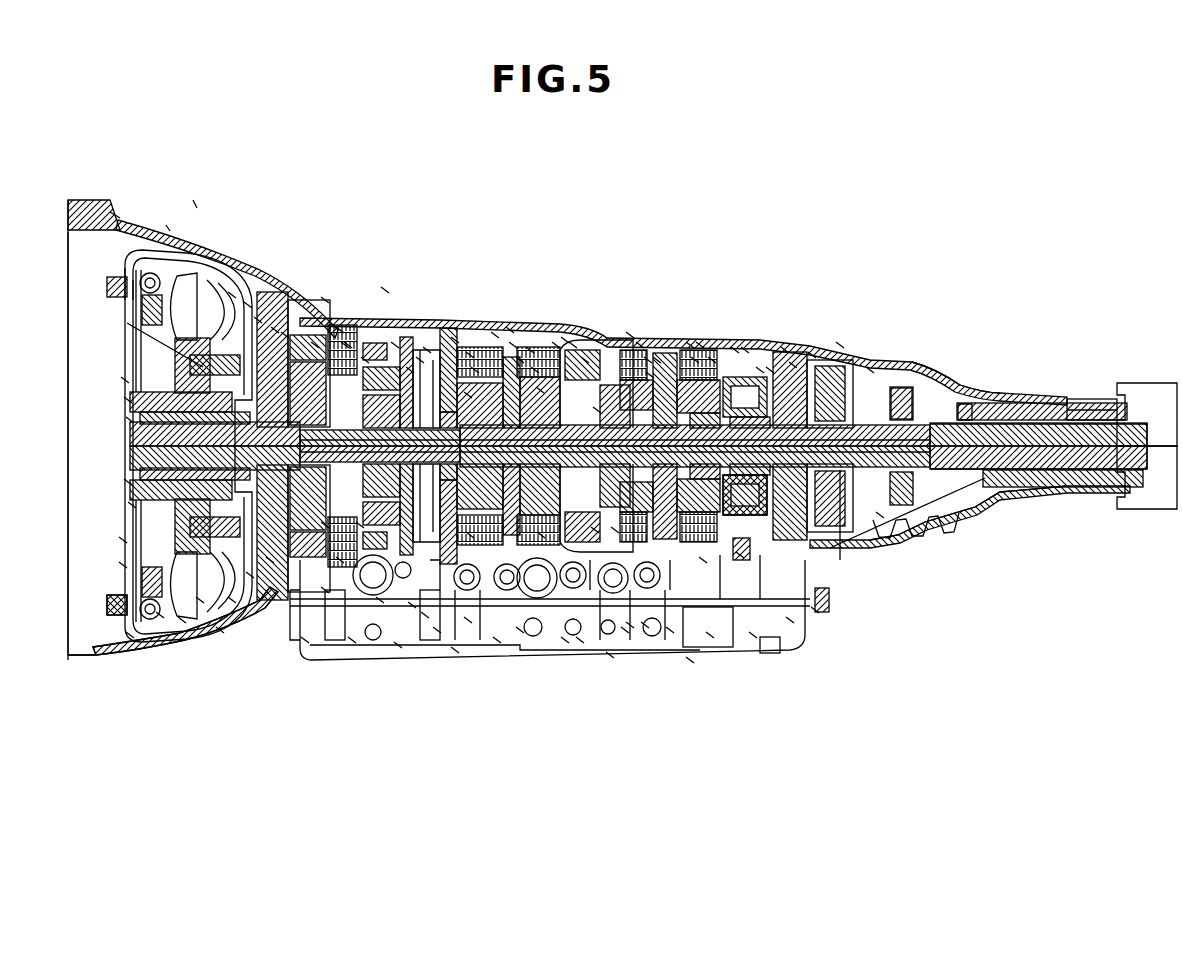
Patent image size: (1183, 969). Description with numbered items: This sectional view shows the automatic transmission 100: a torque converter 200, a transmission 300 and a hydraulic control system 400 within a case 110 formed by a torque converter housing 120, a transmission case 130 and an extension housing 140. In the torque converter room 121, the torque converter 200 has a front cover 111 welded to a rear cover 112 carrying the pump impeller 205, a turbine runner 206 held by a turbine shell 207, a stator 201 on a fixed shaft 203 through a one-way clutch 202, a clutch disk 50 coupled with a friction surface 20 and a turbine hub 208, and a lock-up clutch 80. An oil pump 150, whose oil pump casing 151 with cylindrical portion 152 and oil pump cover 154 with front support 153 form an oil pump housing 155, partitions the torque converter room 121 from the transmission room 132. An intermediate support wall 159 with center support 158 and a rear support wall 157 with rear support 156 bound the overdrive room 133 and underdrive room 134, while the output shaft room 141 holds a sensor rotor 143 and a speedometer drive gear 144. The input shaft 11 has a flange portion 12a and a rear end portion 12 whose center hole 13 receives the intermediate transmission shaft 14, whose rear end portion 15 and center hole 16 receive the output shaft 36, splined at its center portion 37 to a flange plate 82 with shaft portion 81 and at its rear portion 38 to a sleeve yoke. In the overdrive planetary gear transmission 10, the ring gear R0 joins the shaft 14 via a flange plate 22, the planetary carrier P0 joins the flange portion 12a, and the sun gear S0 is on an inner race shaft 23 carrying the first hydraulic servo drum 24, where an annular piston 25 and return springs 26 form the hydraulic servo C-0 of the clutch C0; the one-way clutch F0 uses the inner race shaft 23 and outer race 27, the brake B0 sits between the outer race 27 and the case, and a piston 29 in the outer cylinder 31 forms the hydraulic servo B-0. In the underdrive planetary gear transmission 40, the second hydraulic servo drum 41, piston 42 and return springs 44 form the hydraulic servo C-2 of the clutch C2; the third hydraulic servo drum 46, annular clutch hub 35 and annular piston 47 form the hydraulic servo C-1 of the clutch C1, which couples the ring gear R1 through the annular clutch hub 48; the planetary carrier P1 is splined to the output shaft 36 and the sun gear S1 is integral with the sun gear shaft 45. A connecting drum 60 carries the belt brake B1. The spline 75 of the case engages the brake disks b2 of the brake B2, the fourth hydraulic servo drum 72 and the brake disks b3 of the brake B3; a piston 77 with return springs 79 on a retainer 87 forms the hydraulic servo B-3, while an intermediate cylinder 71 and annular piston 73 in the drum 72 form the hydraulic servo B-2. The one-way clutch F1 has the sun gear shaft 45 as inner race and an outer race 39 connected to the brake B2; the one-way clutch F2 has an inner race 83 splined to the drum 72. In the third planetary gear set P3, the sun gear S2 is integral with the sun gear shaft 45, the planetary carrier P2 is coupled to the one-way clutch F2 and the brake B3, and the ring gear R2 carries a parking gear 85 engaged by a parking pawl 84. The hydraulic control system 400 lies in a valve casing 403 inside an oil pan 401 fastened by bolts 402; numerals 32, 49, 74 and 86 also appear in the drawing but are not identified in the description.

The automatic transmission 100 is at (198, 198).
The case 110 is at (171, 221).
The torque converter 200 is at (148, 262).
The torque converter housing 120 is at (115, 215).
The cylindrical portion 152 is at (232, 295).
The oil pump 150 is at (248, 305).
The oil pump casing 151 is at (258, 320).
The oil pump cover 154 is at (275, 330).
The front support 153 is at (285, 335).
The transmission case 130 is at (325, 300).
The overdrive planetary gear transmission 10 is at (385, 290).
The first hydraulic servo drum 24 is at (340, 330).
The inner race shaft 23 is at (348, 345).
The outer race 27 is at (395, 345).
The planetary carrier P0 is at (410, 370).
The hydraulic servo C-0 is at (315, 345).
The multiple disk brake B0 is at (345, 345).
The ring gear R0 is at (420, 360).
The annular piston 25 is at (365, 360).
The flange plate 22 is at (427, 350).
The hydraulic servo B-0 is at (455, 340).
The hydraulic servo C-2 is at (470, 355).
The second hydraulic servo drum 41 is at (475, 370).
The piston 42 is at (468, 395).
The underdrive planetary gear transmission 40 is at (495, 335).
The return springs 44 is at (510, 330).
The belt brake B1 is at (513, 345).
The multiple disk clutch C2 is at (520, 360).
The hydraulic servo C-1 is at (530, 350).
The third hydraulic servo drum 46 is at (535, 370).
The annular piston 47 is at (540, 390).
The multiple disk clutch C1 is at (556, 345).
The clutch piston 49 is at (565, 340).
The planetary carrier P1 is at (573, 345).
The ring gear R1 is at (585, 360).
The sun gear S1 is at (597, 410).
The connecting drum 60 is at (630, 335).
The multiple disk brake B2 is at (640, 345).
The spline 75 is at (648, 360).
The brake disks b2 is at (650, 375).
The outer race 39 is at (657, 360).
The hydraulic servo B-2 is at (690, 345).
The fourth hydraulic servo drum 72 is at (695, 360).
The multiple disk brake B3 is at (700, 345).
The brake disks b3 is at (712, 360).
The planetary carrier P2 is at (735, 350).
The sun gear S2 is at (745, 350).
The ring gear R2 is at (760, 370).
The flange plate 82 is at (770, 370).
The retainer 87 is at (785, 350).
The hydraulic servo B-3 is at (793, 365).
The rear support wall 157 is at (840, 345).
The shaft portion 81 is at (812, 355).
The rear support 156 is at (870, 370).
The sensor rotor 143 is at (900, 400).
The extension housing 140 is at (935, 375).
The speedometer drive gear 144 is at (965, 408).
The torque converter room 121 is at (100, 257).
The oil pump housing 155 is at (125, 322).
The input shaft 11 is at (125, 380).
The turbine hub 208 is at (128, 400).
The fixed shaft 203 is at (130, 420).
The one-way clutch 202 is at (128, 482).
The stator 201 is at (132, 505).
The front cover 111 is at (123, 540).
The friction surface 20 is at (123, 565).
The clutch disk 50 is at (108, 600).
The lock-up clutch 80 is at (130, 635).
The turbine shell 207 is at (160, 615).
The turbine runner 206 is at (182, 620).
The pump impeller 205 is at (200, 600).
The rear cover 112 is at (220, 630).
The rear end portion 12 is at (232, 600).
The center hole 13 is at (250, 575).
The return springs 26 is at (270, 560).
The overdrive room 133 is at (305, 640).
The sun gear S0 is at (325, 590).
The multiple disk clutch C0 is at (340, 560).
The transmission room 132 is at (352, 640).
The valve body 32 is at (380, 600).
The flange portion 12a is at (398, 645).
The piston 29 is at (412, 605).
The outer cylinder 31 is at (425, 615).
The intermediate support wall 159 is at (437, 630).
The hydraulic control system 400 is at (459, 658).
The center support 158 is at (468, 620).
The annular clutch hub 35 is at (497, 640).
The annular clutch hub 48 is at (520, 630).
The valve casing 403 is at (565, 640).
The underdrive room 134 is at (580, 640).
The transmission 300 is at (610, 655).
The accumulator 74 is at (625, 630).
The intermediate cylinder 71 is at (630, 625).
The annular piston 73 is at (645, 625).
The brake servo 86 is at (670, 630).
The parking pawl 84 is at (710, 635).
The parking gear 85 is at (753, 635).
The oil pan 401 is at (690, 660).
The piston 77 is at (790, 620).
The return springs 79 is at (815, 610).
The bolts 402 is at (829, 603).
The inner race 83 is at (740, 555).
The sun gear shaft 45 is at (703, 560).
The one-way clutch F2 is at (733, 545).
The one-way clutch F1 is at (615, 530).
The output shaft 36 is at (595, 530).
The center hole 16 is at (541, 535).
The rear end portion 15 is at (470, 535).
The intermediate transmission shaft 14 is at (360, 525).
The one-way clutch F0 is at (325, 525).
The third planetary gear set P3 is at (751, 500).
The output shaft room 141 is at (937, 513).
The center portion 37 is at (880, 515).
The rear portion 38 is at (1070, 455).